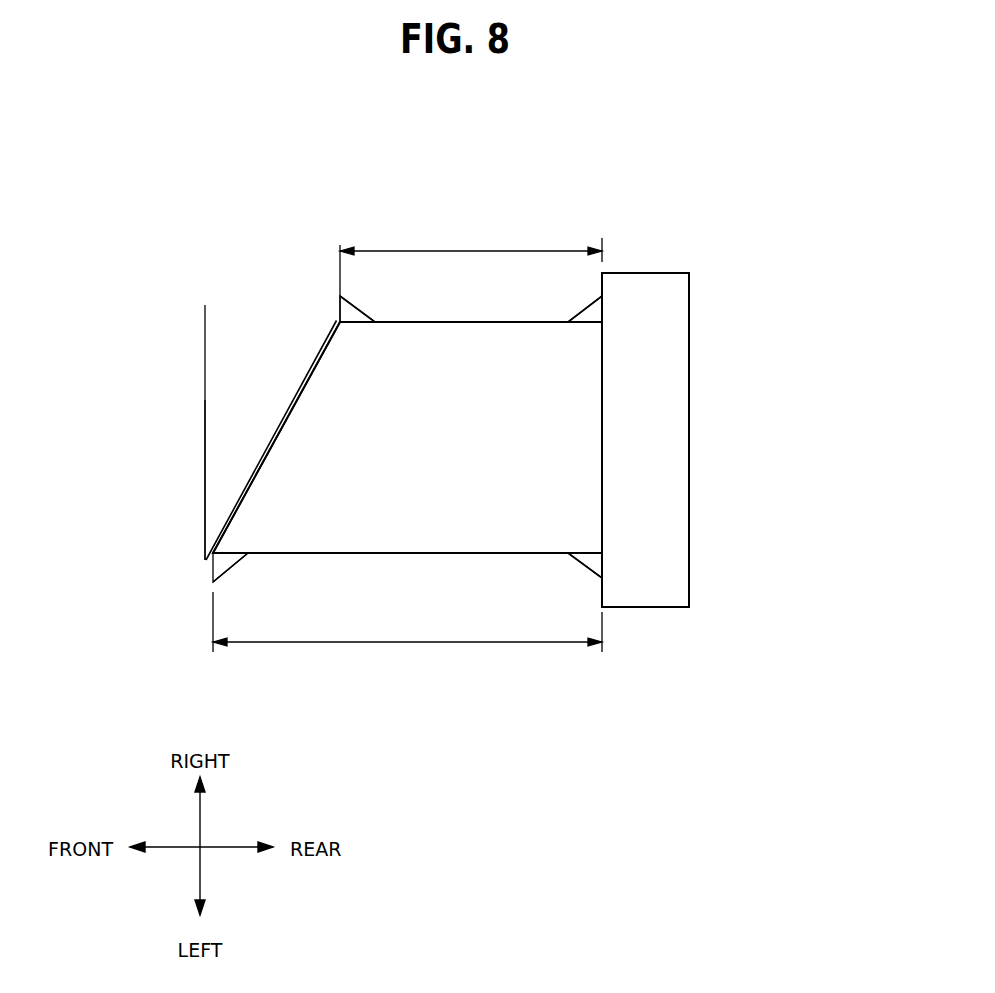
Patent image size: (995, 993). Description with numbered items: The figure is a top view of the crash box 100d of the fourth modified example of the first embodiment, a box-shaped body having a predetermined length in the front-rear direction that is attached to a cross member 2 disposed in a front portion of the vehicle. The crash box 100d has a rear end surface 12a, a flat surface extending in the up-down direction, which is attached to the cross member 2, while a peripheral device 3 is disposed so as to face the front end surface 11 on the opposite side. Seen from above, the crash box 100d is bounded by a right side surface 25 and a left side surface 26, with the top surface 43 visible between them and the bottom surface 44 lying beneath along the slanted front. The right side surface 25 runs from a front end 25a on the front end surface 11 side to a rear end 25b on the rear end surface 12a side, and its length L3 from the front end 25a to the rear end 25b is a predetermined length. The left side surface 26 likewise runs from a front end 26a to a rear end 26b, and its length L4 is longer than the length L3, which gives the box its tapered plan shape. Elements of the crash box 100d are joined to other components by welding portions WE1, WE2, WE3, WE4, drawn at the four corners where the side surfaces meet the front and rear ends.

The crash box 100d is at (556, 201).
The cross member 2 is at (648, 283).
The rear end surface 12a is at (603, 435).
The peripheral device 3 is at (256, 405).
The front end surface 11 is at (244, 492).
The top surface 43 is at (468, 448).
The bottom surface 44 is at (436, 321).
The right side surface 25 is at (482, 320).
The front end of right side surface 25a is at (348, 317).
The rear end of right side surface 25b is at (599, 318).
The left side surface 26 is at (426, 557).
The front end of left side surface 26a is at (226, 563).
The rear end of left side surface 26b is at (599, 557).
The welding portion WE1 is at (590, 318).
The welding portion WE2 is at (590, 563).
The welding portion WE3 is at (352, 314).
The welding portion WE4 is at (230, 566).
The length of right side surface L3 is at (471, 273).
The length of left side surface L4 is at (407, 633).